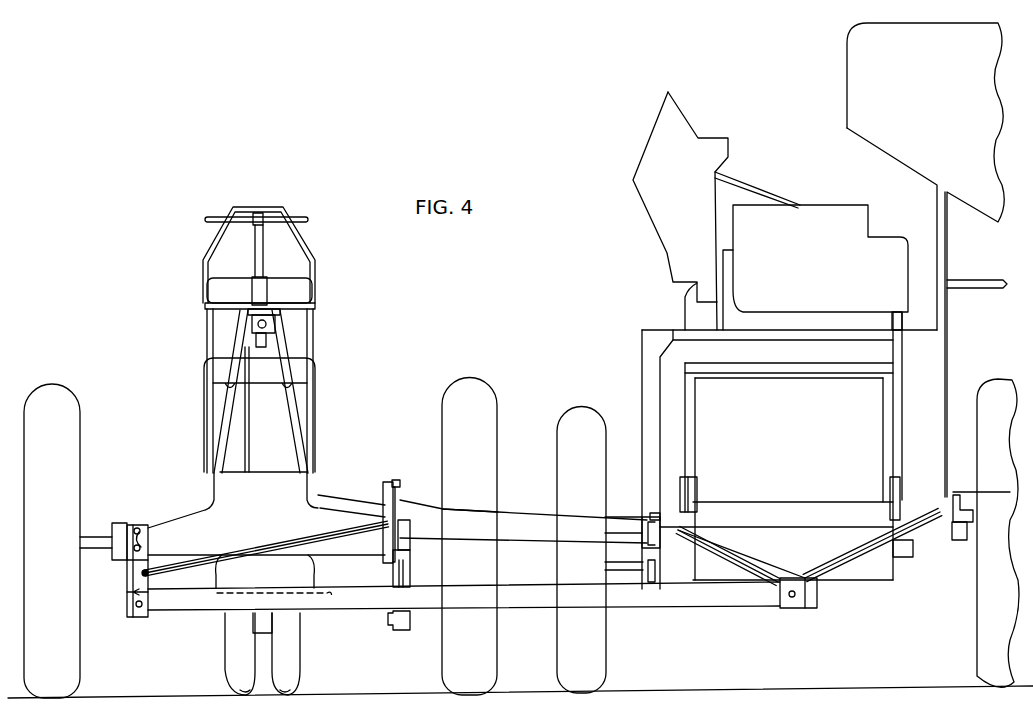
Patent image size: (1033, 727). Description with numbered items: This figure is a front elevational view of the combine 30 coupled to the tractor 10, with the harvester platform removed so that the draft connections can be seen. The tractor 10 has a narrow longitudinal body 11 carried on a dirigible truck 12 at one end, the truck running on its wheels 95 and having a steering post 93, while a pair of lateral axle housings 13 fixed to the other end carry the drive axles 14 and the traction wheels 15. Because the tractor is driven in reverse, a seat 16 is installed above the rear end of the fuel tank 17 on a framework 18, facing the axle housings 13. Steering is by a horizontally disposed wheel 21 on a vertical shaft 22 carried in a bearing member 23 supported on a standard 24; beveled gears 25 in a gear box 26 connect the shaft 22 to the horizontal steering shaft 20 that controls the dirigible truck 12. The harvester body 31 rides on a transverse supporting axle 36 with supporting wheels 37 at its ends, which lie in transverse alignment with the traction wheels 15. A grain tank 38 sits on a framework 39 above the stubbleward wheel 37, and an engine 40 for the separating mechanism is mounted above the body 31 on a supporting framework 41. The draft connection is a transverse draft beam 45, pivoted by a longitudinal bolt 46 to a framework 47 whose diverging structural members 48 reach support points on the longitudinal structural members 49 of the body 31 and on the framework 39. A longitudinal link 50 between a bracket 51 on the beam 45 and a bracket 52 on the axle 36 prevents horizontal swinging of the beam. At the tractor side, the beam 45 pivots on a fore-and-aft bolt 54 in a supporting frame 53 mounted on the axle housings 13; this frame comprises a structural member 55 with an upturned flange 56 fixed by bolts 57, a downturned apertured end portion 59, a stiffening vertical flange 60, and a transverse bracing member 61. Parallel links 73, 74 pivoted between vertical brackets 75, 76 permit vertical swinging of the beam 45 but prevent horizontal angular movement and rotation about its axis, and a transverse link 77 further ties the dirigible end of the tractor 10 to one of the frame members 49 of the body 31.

The tractor 10 is at (358, 377).
The tractor body 11 is at (257, 448).
The dirigible truck 12 is at (315, 659).
The axle housings 13 is at (188, 517).
The drive axles 14 is at (92, 538).
The traction wheels 15 is at (62, 397).
The seat 16 is at (284, 285).
The fuel tank 17 is at (300, 356).
The framework 18 is at (208, 326).
The steering shaft 20 is at (253, 337).
The wheel 21 is at (297, 216).
The vertical shaft 22 is at (262, 240).
The bearing member 23 is at (255, 287).
The standard 24 is at (292, 390).
The beveled gears 25 is at (290, 305).
The gear box 26 is at (277, 326).
The combine 30 is at (645, 296).
The harvester body 31 is at (770, 428).
The supporting axle 36 is at (617, 535).
The supporting wheels 37 is at (600, 650).
The grain tank 38 is at (910, 81).
The framework 39 is at (943, 316).
The engine 40 is at (790, 264).
The supporting framework 41 is at (647, 370).
The draft beam 45 is at (523, 603).
The pivot bolt 46 is at (792, 607).
The framework 47 is at (809, 560).
The structural members 48 is at (732, 562).
The longitudinal structural members 49 is at (692, 523).
The link 50 is at (643, 540).
The bracket 51 is at (648, 577).
The bracket 52 is at (645, 525).
The supporting frame 53 is at (113, 570).
The pivot bolt 54 is at (137, 612).
The structural member 55 is at (150, 581).
The flange 56 is at (143, 550).
The bolts 57 is at (139, 528).
The end portion 59 is at (147, 612).
The vertical flange 60 is at (125, 583).
The bracing member 61 is at (282, 547).
The parallel link 73 is at (397, 517).
The parallel link 74 is at (390, 584).
The vertical bracket 75 is at (410, 621).
The vertical bracket 76 is at (388, 480).
The link 77 is at (525, 512).
The steering post 93 is at (265, 625).
The wheels 95 is at (280, 688).